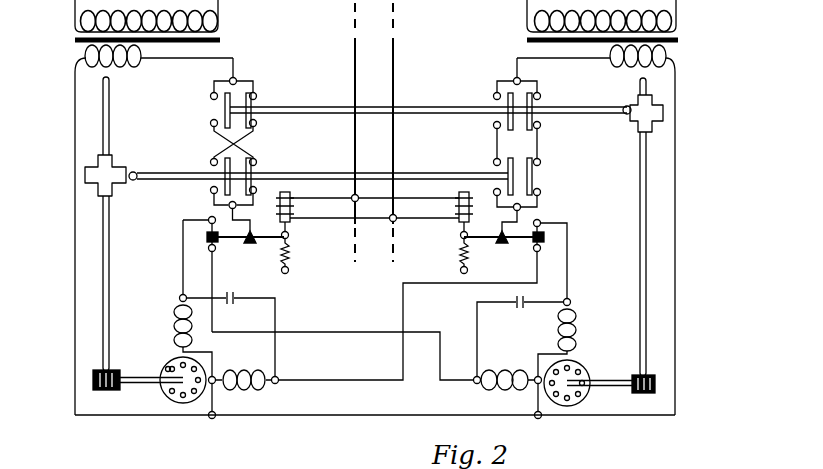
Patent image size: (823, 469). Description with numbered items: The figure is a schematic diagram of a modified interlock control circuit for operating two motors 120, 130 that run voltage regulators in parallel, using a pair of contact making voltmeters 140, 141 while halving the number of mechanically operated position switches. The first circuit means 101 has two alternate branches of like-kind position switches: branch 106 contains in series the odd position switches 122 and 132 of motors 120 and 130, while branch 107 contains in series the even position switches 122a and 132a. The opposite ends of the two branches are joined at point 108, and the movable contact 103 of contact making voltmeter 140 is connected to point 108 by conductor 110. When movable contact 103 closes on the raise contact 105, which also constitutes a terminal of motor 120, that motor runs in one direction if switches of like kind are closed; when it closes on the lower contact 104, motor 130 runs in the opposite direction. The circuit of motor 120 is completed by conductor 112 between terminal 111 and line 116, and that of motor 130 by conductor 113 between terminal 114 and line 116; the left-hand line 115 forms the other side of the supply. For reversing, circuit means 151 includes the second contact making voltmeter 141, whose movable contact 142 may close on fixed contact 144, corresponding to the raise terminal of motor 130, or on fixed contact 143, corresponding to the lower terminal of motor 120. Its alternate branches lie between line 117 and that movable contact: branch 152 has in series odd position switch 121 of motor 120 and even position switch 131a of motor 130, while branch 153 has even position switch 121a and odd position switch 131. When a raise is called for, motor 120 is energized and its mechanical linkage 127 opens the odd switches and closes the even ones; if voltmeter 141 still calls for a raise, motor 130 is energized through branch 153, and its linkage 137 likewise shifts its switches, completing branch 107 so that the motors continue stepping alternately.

The first circuit means 101 is at (520, 77).
The movable contact 103 is at (531, 241).
The lower contact 104 is at (537, 252).
The raise contact 105 is at (541, 223).
The alternate branch 106 is at (540, 95).
The alternate branch 107 is at (496, 93).
The connection point 108 is at (521, 207).
The conductor 110 is at (502, 222).
The terminal 111 is at (536, 364).
The conductor 112 is at (536, 402).
The conductor 113 is at (215, 399).
The terminal 114 is at (216, 378).
The conductor 115 is at (75, 233).
The line 116 is at (474, 415).
The line 117 is at (210, 58).
The motor 120 is at (612, 411).
The odd position switch 121 is at (428, 115).
The even position switch 121a is at (225, 109).
The odd position switch 122 is at (540, 125).
The even position switch 122a is at (508, 122).
The mechanical linkage 127 is at (640, 283).
The motor 130 is at (158, 408).
The odd position switch 131 is at (256, 162).
The even position switch 131a is at (210, 162).
The odd position switch 132 is at (540, 175).
The even position switch 132a is at (481, 173).
The mechanical linkage 137 is at (109, 302).
The contact making voltmeter 140 is at (452, 246).
The second contact making voltmeter 141 is at (325, 246).
The movable contact 142 is at (246, 243).
The fixed contact 143 is at (212, 251).
The fixed contact 144 is at (209, 219).
The circuit means 151 is at (237, 76).
The branch 152 is at (256, 95).
The branch 153 is at (211, 94).